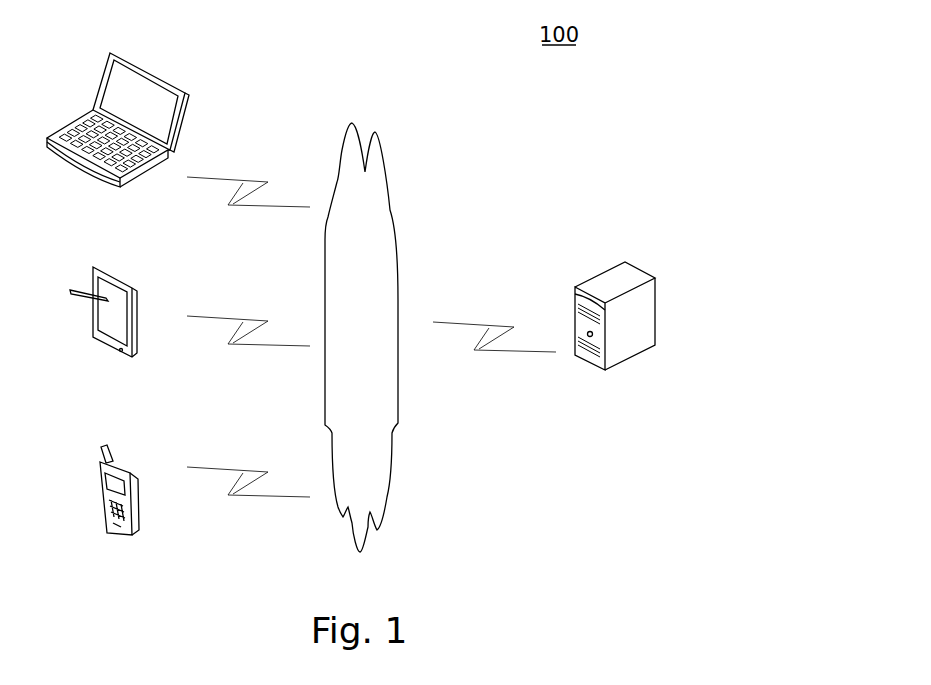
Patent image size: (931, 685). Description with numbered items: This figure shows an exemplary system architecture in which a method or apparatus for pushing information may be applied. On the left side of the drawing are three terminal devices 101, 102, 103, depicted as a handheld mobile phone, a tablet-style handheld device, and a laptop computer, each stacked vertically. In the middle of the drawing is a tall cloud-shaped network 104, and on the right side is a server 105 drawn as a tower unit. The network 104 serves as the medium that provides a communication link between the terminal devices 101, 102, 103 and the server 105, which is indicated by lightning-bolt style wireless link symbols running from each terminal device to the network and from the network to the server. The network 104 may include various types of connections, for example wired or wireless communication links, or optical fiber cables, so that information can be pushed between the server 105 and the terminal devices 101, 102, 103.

The terminal device 101 is at (118, 507).
The terminal device 102 is at (103, 331).
The terminal device 103 is at (118, 138).
The network 104 is at (361, 337).
The server 105 is at (615, 336).